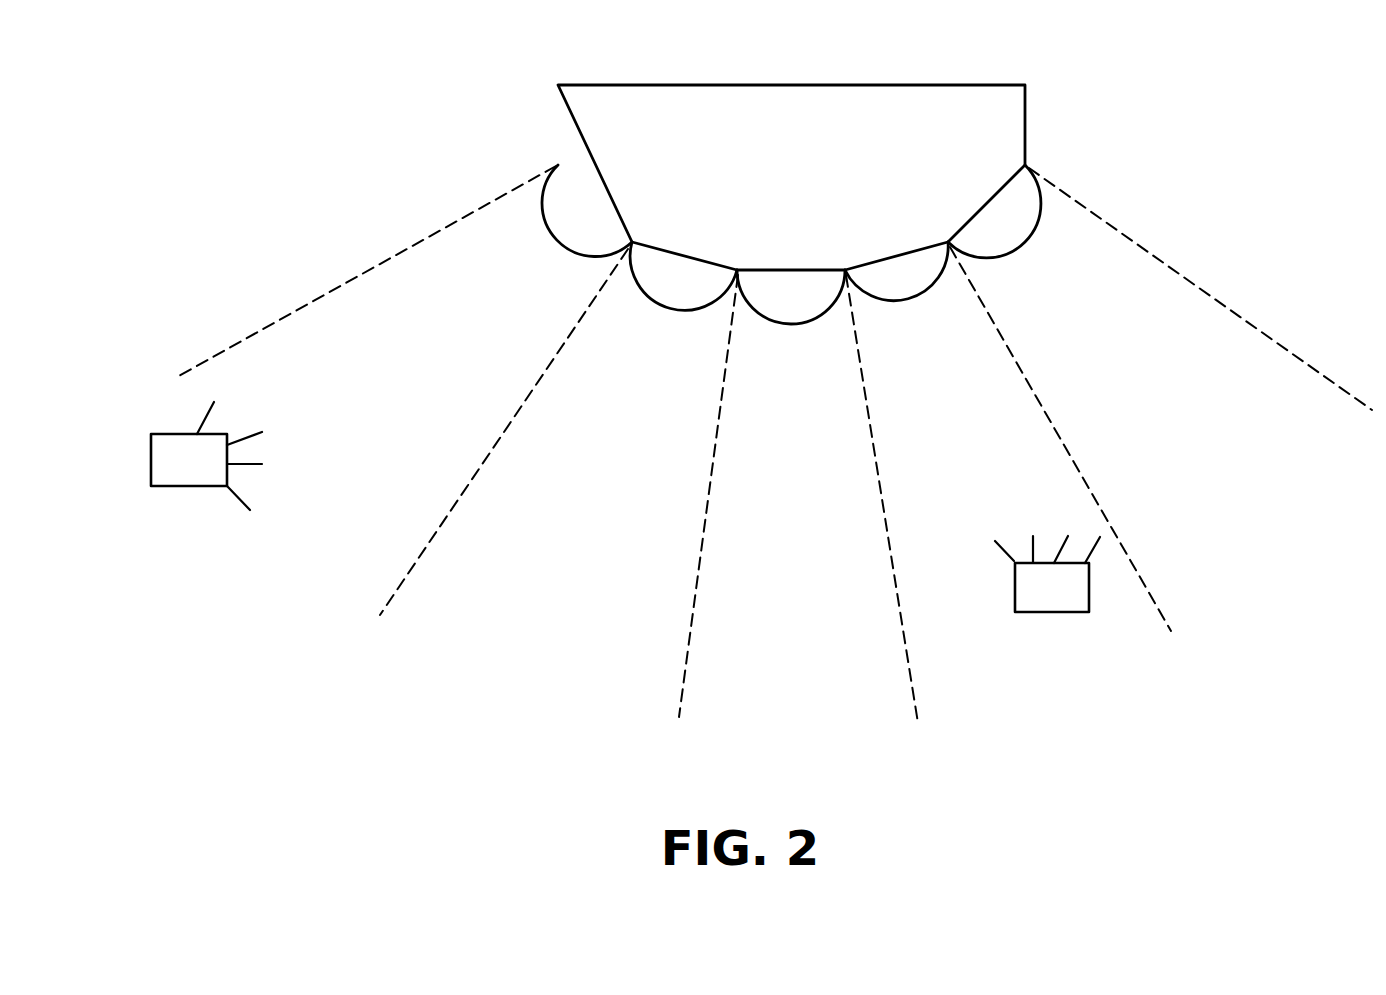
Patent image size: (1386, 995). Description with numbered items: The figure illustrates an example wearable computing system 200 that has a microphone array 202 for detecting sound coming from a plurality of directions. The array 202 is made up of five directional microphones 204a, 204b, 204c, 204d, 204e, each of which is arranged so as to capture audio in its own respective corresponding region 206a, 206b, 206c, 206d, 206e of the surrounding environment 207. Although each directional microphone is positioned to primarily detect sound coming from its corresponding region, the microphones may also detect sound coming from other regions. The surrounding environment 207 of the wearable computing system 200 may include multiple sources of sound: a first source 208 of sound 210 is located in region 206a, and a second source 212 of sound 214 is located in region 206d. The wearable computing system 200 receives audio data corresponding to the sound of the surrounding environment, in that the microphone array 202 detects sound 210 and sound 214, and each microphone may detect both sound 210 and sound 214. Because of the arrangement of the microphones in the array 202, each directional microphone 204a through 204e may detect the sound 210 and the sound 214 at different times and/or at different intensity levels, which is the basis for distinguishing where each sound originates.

The wearable computing system 200 is at (727, 178).
The microphone array 202 is at (513, 150).
The directional microphone 204a is at (587, 211).
The directional microphone 204b is at (683, 276).
The directional microphone 204c is at (791, 297).
The directional microphone 204d is at (896, 271).
The directional microphone 204e is at (994, 211).
The region 206a is at (366, 288).
The region 206b is at (504, 432).
The region 206c is at (747, 496).
The region 206d is at (930, 499).
The region 206e is at (1161, 399).
The surrounding environment 207 is at (331, 218).
The first source 208 is at (184, 454).
The sound 210 is at (183, 410).
The second source 212 is at (1002, 574).
The sound 214 is at (974, 559).